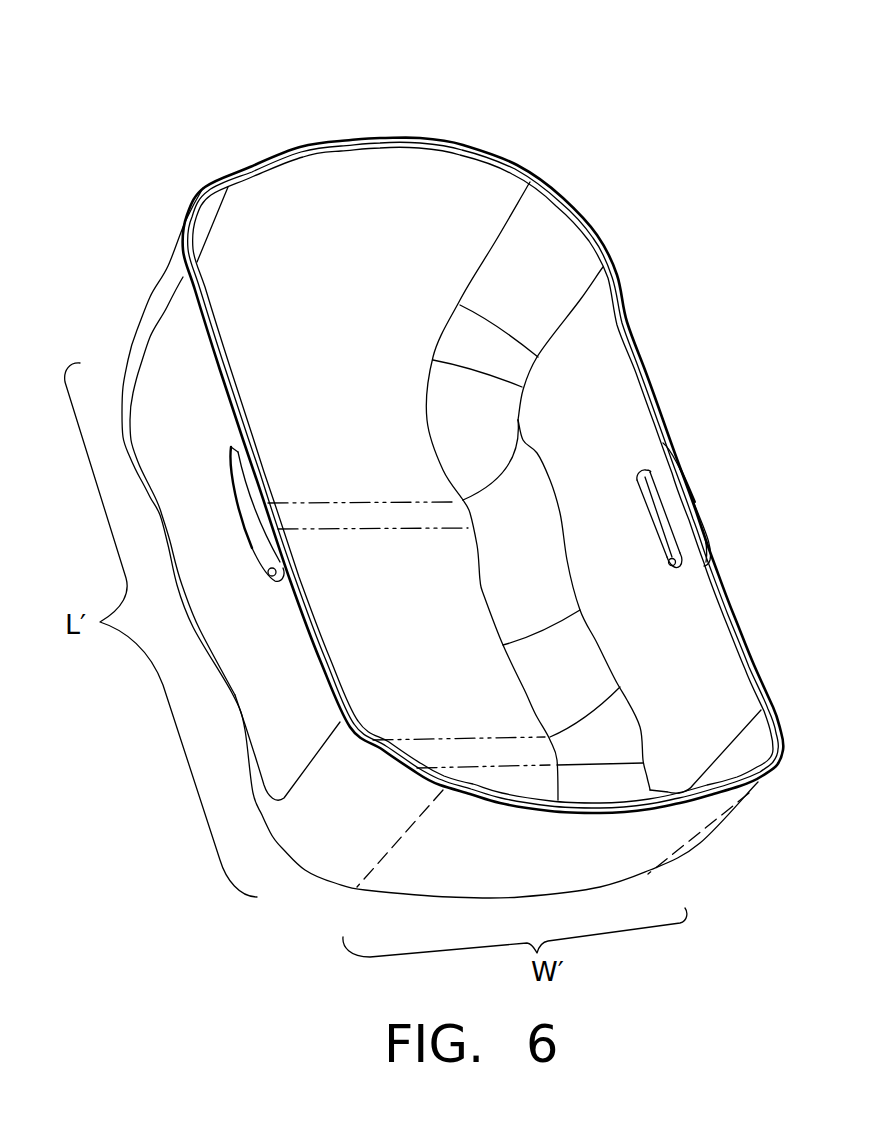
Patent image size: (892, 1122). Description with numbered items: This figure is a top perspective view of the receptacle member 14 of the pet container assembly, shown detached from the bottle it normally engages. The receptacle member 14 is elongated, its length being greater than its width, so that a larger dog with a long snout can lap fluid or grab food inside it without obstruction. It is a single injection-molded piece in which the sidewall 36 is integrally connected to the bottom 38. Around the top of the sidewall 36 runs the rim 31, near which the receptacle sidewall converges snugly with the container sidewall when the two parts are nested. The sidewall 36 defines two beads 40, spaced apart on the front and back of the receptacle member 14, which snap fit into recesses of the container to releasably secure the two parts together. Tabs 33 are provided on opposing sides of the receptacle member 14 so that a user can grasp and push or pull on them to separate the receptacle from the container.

The receptacle member 14 is at (472, 72).
The rim 31 is at (756, 786).
The tab 33 is at (245, 510).
The sidewall 36 is at (340, 816).
The bottom 38 is at (417, 473).
The bead 40 is at (640, 492).